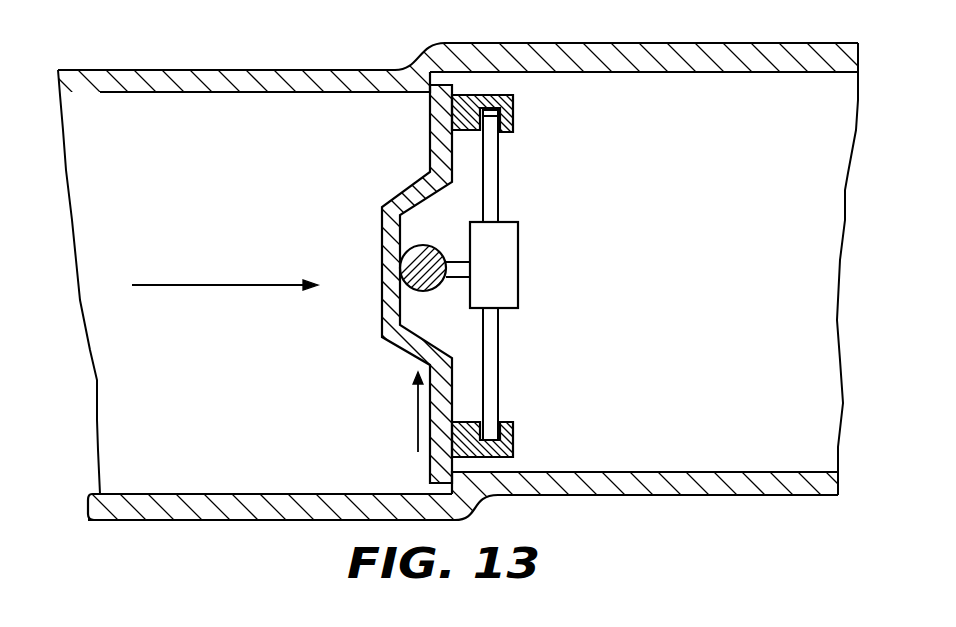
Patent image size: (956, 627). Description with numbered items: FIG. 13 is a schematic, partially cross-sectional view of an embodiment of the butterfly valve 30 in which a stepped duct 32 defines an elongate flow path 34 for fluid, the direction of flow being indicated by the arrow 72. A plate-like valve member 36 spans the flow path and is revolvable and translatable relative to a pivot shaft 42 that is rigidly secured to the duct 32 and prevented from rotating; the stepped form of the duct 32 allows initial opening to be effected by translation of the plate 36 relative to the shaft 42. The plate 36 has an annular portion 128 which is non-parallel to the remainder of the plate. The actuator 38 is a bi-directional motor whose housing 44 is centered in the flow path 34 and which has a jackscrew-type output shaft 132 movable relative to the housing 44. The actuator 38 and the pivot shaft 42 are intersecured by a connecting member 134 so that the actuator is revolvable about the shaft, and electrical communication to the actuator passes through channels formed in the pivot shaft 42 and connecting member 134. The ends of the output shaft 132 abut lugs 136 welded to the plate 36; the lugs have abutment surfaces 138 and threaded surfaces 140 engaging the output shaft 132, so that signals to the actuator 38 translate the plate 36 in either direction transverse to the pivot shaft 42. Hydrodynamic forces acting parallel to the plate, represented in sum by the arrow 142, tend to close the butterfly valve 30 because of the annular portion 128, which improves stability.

The butterfly valve 30 is at (228, 52).
The duct 32 is at (333, 77).
The flow path 34 is at (771, 316).
The plate-like valve member 36 is at (428, 285).
The actuator 38 is at (533, 261).
The pivot shaft 42 is at (431, 291).
The housing 44 is at (518, 282).
The arrow indicating fluid flow direction 72 is at (240, 285).
The annular portion 128 is at (410, 193).
The output shaft 132 is at (500, 177).
The connecting member 134 is at (453, 262).
The lugs 136 is at (513, 100).
The abutment surfaces 138 is at (514, 430).
The threaded surfaces 140 is at (499, 135).
The arrow representing hydrodynamic forces 142 is at (417, 438).